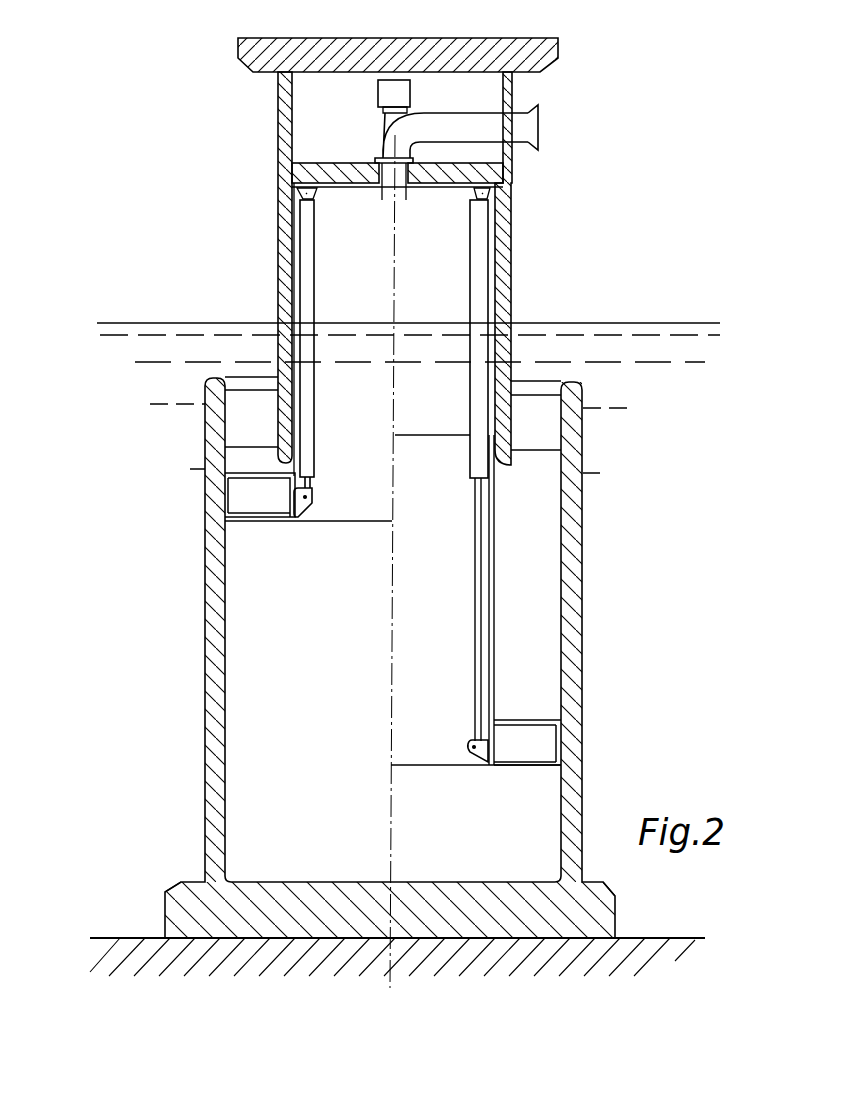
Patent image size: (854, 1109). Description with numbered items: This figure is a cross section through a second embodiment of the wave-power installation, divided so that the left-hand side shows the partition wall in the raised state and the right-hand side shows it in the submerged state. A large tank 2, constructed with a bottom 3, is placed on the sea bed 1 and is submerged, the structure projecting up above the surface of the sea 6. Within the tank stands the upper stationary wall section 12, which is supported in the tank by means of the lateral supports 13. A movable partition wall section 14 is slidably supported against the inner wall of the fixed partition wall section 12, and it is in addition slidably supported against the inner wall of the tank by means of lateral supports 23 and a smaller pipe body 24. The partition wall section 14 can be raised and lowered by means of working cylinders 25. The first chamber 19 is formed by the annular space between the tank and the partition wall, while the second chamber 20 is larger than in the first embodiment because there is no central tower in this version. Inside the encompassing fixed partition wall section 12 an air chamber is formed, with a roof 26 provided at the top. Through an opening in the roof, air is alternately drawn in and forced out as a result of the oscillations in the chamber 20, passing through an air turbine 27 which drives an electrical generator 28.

The sea bed 1 is at (661, 955).
The tank 2 is at (580, 666).
The bottom 3 is at (185, 908).
The surface of the sea 6 is at (650, 328).
The upper stationary wall section 12 is at (504, 242).
The lateral supports 13 is at (545, 400).
The movable partition wall section 14 is at (494, 632).
The first chamber 19 is at (540, 558).
The second chamber 20 is at (452, 510).
The lateral supports 23 is at (515, 753).
The smaller pipe body 24 is at (557, 738).
The working cylinders 25 is at (480, 302).
The roof 26 is at (318, 163).
The air turbine 27 is at (534, 117).
The electrical generator 28 is at (403, 87).